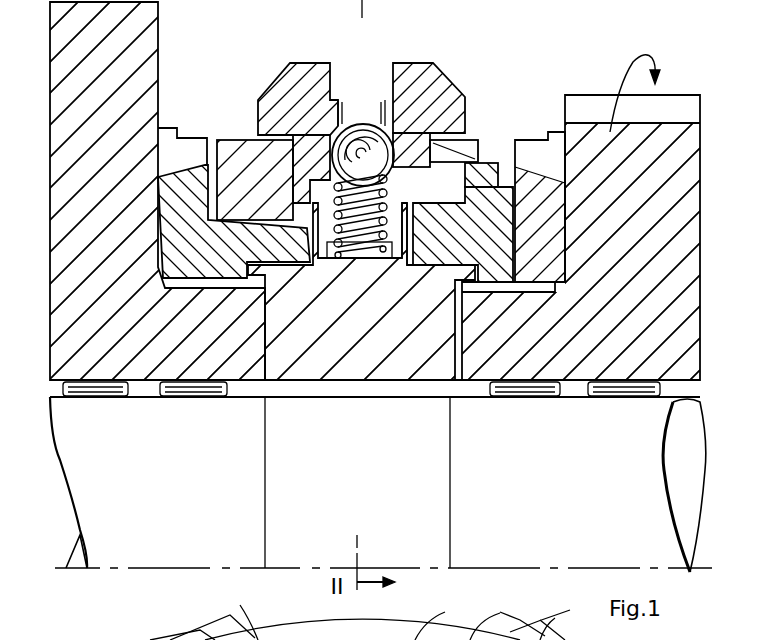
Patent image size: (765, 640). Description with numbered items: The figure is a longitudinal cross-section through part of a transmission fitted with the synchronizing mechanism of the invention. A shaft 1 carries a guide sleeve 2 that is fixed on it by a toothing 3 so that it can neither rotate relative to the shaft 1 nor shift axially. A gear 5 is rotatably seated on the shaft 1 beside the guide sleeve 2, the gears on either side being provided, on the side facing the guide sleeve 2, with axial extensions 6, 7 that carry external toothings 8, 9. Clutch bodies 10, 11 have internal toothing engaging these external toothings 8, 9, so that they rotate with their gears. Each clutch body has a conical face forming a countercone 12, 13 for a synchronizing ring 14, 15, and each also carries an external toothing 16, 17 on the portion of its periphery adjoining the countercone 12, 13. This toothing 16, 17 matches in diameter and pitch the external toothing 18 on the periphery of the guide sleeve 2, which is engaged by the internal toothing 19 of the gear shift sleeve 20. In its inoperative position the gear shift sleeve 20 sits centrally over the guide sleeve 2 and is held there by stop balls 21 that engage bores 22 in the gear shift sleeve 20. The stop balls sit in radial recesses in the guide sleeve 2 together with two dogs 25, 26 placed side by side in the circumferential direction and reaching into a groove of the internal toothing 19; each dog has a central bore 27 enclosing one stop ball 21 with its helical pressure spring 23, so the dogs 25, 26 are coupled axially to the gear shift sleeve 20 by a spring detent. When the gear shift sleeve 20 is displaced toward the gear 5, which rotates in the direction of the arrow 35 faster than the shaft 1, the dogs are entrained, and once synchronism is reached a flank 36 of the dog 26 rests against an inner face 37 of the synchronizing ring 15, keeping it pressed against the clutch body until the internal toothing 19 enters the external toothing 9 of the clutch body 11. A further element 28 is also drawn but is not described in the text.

The shaft 1 is at (150, 528).
The guide sleeve 2 is at (303, 363).
The toothing 3 is at (350, 390).
The gear 5 is at (640, 357).
The axial extension 6 is at (213, 380).
The axial extension 7 is at (505, 362).
The external toothing 8 is at (185, 283).
The external toothing 9 is at (533, 290).
The clutch body 10 is at (187, 200).
The clutch body 11 is at (572, 182).
The countercone 12 is at (200, 300).
The countercone 13 is at (450, 253).
The synchronizing ring 14 is at (242, 170).
The synchronizing ring 15 is at (499, 173).
The external toothing 16 is at (170, 143).
The external toothing 17 is at (553, 155).
The external toothing 18 is at (480, 150).
The internal toothing 19 is at (447, 67).
The gear shift sleeve 20 is at (272, 103).
The stop ball 21 is at (440, 147).
The bore 22 is at (350, 110).
The helical pressure spring 23 is at (358, 240).
The dog 25 is at (302, 153).
The dog 26 is at (448, 602).
The central bore 27 is at (316, 130).
The element 28 is at (563, 625).
The arrow 35 is at (633, 52).
The flank 36 is at (400, 247).
The inner face 37 is at (505, 230).